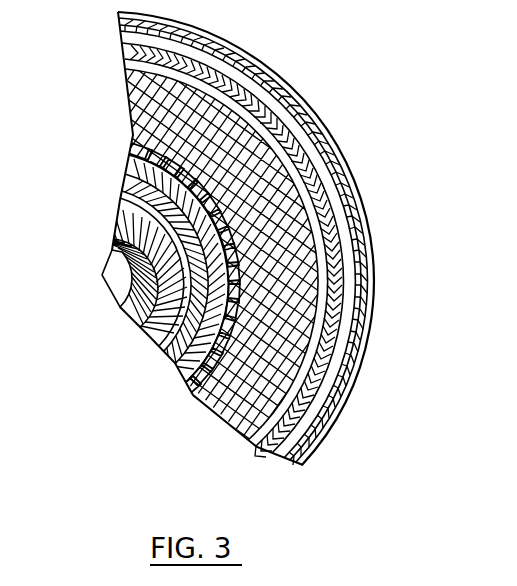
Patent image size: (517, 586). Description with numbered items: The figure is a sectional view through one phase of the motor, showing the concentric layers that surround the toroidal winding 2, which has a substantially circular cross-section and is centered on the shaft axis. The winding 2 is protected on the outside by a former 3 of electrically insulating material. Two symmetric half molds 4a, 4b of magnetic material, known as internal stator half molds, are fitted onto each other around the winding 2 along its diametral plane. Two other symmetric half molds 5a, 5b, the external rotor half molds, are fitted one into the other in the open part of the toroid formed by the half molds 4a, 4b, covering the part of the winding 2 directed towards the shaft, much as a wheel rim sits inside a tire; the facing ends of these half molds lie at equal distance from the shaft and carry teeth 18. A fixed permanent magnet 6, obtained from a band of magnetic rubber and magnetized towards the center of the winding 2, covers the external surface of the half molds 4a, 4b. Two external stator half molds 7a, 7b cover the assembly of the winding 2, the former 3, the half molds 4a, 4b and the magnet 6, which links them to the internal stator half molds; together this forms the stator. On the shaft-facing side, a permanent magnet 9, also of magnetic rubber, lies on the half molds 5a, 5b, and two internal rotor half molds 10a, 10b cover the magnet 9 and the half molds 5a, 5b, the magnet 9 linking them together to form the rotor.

The toroidal winding 2 is at (303, 327).
The former 3 is at (140, 145).
The internal stator half mold 4a is at (325, 213).
The internal stator half mold 4b is at (340, 277).
The external rotor half mold 5a is at (170, 365).
The external rotor half mold 5b is at (170, 385).
The permanent magnet 6 is at (307, 135).
The external stator half mold 7a is at (333, 162).
The external stator half mold 7b is at (363, 313).
The permanent magnet 9 is at (175, 333).
The internal rotor half mold 10a is at (120, 245).
The internal rotor half mold 10b is at (133, 222).
The teeth 18 is at (188, 383).